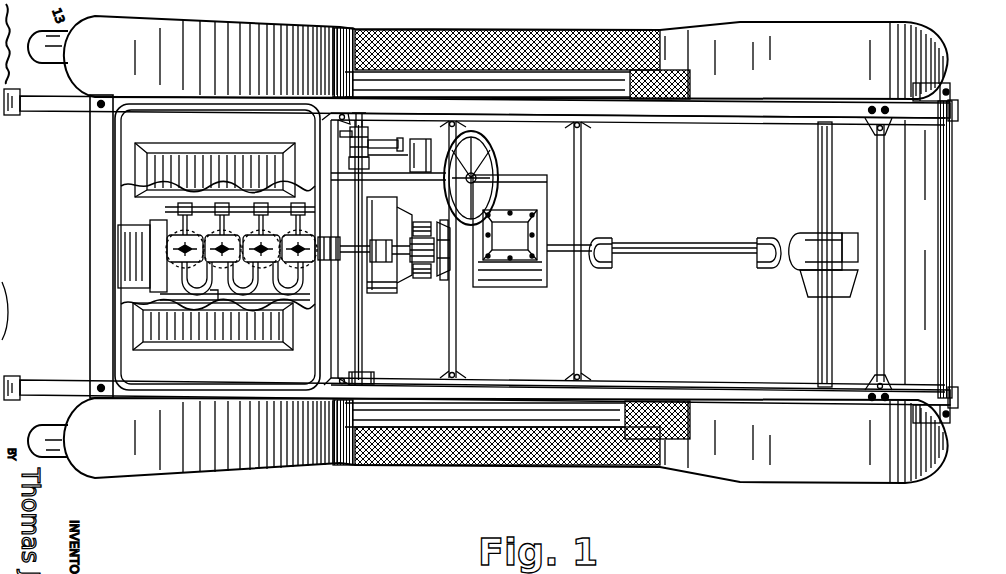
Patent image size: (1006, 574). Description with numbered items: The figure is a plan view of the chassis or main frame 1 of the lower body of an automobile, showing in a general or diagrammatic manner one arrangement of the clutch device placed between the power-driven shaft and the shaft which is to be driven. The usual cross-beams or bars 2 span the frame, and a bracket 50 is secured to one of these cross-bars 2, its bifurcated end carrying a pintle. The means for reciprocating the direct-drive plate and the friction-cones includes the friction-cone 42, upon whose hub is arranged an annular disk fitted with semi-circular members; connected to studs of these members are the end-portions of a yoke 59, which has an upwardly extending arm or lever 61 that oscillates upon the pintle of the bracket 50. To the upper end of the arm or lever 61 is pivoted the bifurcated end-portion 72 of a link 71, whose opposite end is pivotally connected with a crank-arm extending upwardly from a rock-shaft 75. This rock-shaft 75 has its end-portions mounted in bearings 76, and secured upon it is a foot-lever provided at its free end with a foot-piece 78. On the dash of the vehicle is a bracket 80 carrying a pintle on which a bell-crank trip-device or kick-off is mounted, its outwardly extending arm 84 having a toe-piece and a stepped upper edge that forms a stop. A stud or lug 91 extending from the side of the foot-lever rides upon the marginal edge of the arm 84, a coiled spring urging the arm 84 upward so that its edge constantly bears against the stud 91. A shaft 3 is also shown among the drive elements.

The chassis or main frame 1 is at (753, 113).
The cross-beams or bars 2 is at (580, 164).
The shaft 3 is at (385, 210).
The friction-cone 42 is at (398, 307).
The bracket 50 is at (438, 250).
The yoke 59 is at (425, 224).
The arm or lever 61 is at (433, 282).
The link 71 is at (390, 247).
The bifurcated end-portion 72 is at (368, 382).
The rock-shaft 75 is at (363, 351).
The bearings 76 is at (368, 113).
The foot-piece 78 is at (426, 145).
The bracket 80 is at (340, 134).
The outwardly extending arm 84 is at (388, 134).
The stud or lug 91 is at (400, 145).